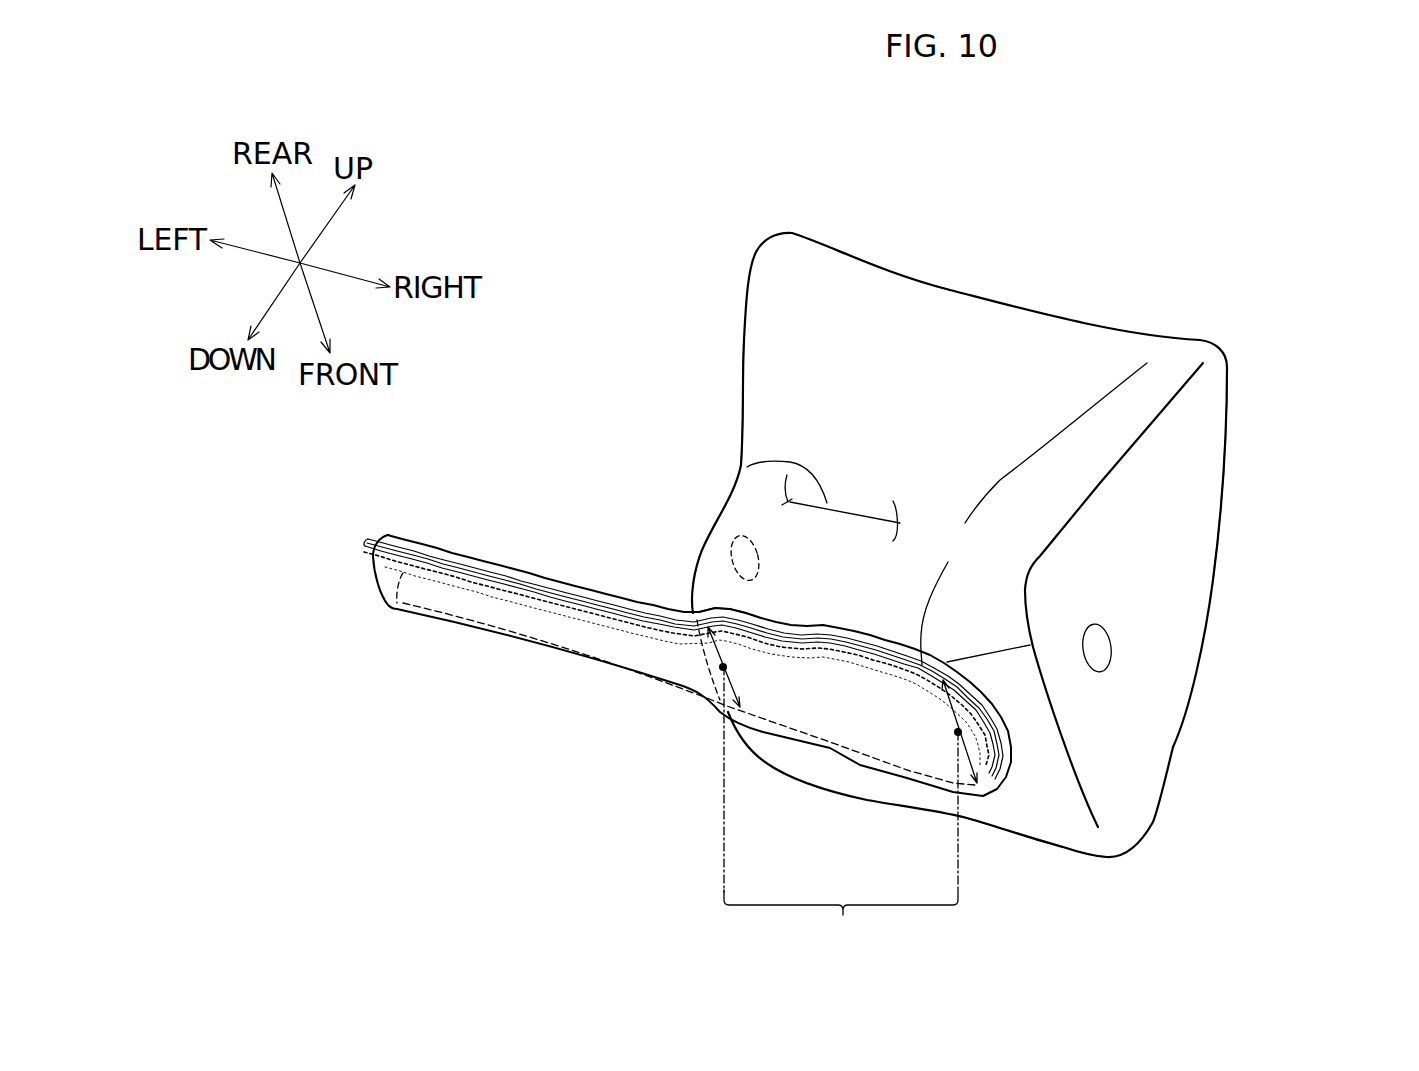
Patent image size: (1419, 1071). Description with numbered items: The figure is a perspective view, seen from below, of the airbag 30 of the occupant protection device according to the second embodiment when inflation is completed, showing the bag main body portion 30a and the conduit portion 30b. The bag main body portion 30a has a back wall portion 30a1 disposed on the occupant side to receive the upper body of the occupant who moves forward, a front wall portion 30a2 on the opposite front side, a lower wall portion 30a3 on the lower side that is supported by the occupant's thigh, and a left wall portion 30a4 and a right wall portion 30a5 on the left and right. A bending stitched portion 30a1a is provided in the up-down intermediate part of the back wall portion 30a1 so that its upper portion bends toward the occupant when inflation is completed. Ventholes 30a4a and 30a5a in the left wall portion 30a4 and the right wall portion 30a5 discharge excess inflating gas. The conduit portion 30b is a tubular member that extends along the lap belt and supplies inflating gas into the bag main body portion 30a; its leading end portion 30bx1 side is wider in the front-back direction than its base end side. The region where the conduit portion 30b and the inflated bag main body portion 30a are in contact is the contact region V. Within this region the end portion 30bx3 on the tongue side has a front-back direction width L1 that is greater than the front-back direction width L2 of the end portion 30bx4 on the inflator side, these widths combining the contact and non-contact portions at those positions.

The airbag 30 is at (879, 566).
The bag main body portion 30a is at (990, 300).
The back wall portion 30a1 is at (817, 343).
The bending stitched portion 30a1a is at (740, 468).
The front wall portion 30a2 is at (1235, 453).
The lower wall portion 30a3 is at (1057, 822).
The left wall portion 30a4 is at (733, 420).
The venthole 30a4a is at (730, 550).
The right wall portion 30a5 is at (1213, 600).
The venthole 30a5a is at (1112, 648).
The conduit portion 30b is at (448, 557).
The leading end portion 30bx1 is at (1015, 753).
The end portion on the tongue side 30bx3 is at (978, 700).
The end portion on the inflator side 30bx4 is at (725, 667).
The front-back direction width L1 is at (947, 786).
The front-back direction width L2 is at (740, 759).
The contact region V is at (841, 923).